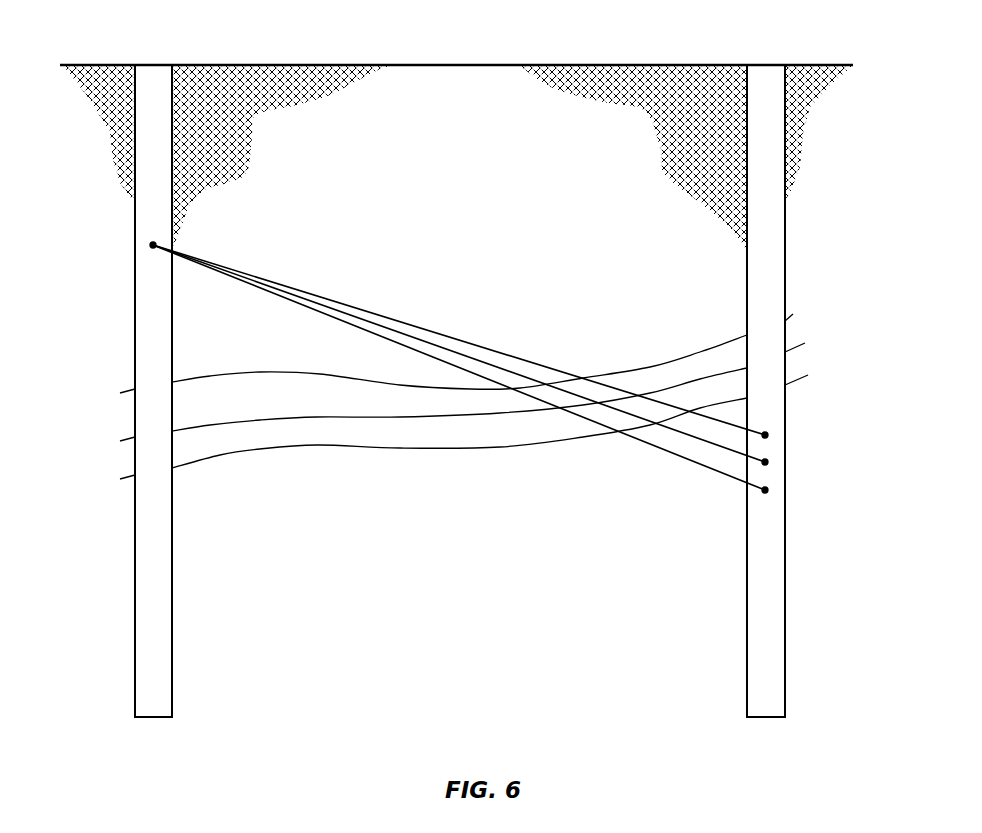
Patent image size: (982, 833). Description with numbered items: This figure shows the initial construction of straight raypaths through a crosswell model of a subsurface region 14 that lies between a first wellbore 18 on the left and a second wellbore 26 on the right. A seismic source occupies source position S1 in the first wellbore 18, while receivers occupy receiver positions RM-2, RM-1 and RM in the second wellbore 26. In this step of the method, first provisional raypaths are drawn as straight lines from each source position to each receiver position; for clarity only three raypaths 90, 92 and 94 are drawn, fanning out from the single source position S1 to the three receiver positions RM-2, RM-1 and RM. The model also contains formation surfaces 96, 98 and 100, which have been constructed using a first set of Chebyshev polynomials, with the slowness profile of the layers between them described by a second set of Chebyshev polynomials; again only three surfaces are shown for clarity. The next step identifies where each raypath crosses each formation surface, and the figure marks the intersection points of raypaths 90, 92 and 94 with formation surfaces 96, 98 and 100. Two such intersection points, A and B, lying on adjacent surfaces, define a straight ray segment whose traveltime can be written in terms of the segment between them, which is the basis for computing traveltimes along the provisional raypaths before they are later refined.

The subsurface region 14 is at (456, 157).
The first wellbore 18 is at (173, 158).
The second wellbore 26 is at (746, 274).
The raypath 90 is at (363, 327).
The raypath 92 is at (468, 357).
The raypath 94 is at (423, 326).
The formation surface 96 is at (207, 375).
The formation surface 98 is at (250, 418).
The formation surface 100 is at (317, 443).
The point A is at (592, 382).
The point B is at (645, 397).
The source position S1 is at (153, 245).
The receiver position RM-2 is at (765, 435).
The receiver position RM-1 is at (765, 462).
The receiver position RM is at (765, 490).